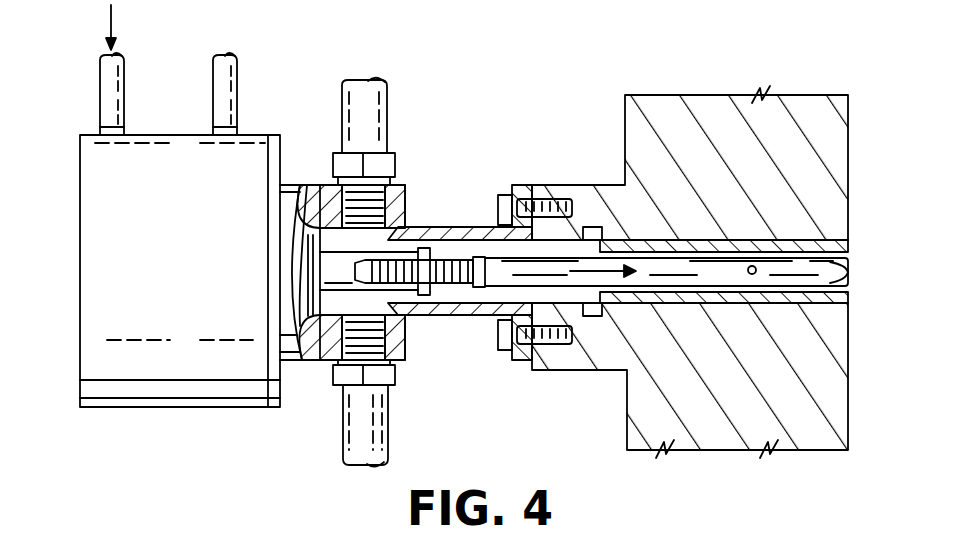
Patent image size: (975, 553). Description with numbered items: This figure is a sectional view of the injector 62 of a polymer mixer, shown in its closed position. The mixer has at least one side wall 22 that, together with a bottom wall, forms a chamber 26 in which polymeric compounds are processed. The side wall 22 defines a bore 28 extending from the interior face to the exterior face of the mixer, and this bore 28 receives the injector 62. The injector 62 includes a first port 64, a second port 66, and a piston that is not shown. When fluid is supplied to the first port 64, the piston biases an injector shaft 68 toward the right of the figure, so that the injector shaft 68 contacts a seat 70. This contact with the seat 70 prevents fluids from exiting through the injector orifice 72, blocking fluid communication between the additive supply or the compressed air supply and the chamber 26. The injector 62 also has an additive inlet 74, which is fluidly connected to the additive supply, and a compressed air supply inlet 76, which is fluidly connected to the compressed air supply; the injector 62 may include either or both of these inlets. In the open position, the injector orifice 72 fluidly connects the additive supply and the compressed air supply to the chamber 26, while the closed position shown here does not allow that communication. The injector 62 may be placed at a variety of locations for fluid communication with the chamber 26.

The side wall 22 is at (718, 115).
The chamber 26 is at (896, 381).
The bore 28 is at (670, 255).
The injector 62 is at (446, 135).
The first port 64 is at (110, 88).
The second port 66 is at (226, 88).
The injector shaft 68 is at (497, 288).
The seat 70 is at (818, 265).
The injector orifice 72 is at (502, 250).
The additive inlet 74 is at (357, 103).
The compressed air supply inlet 76 is at (355, 442).